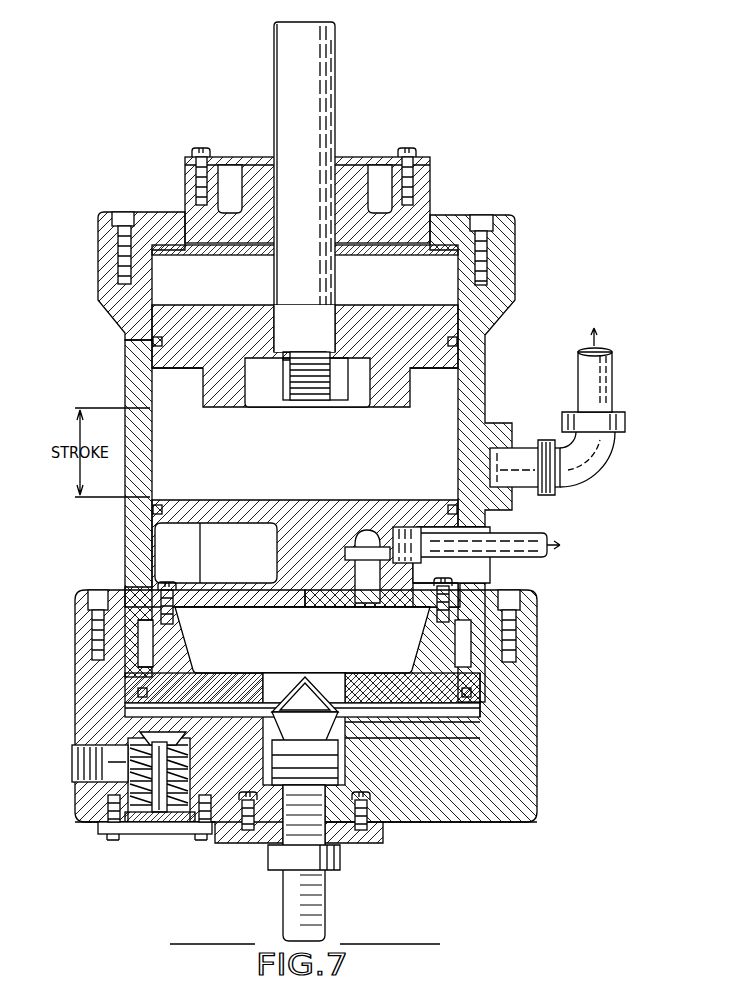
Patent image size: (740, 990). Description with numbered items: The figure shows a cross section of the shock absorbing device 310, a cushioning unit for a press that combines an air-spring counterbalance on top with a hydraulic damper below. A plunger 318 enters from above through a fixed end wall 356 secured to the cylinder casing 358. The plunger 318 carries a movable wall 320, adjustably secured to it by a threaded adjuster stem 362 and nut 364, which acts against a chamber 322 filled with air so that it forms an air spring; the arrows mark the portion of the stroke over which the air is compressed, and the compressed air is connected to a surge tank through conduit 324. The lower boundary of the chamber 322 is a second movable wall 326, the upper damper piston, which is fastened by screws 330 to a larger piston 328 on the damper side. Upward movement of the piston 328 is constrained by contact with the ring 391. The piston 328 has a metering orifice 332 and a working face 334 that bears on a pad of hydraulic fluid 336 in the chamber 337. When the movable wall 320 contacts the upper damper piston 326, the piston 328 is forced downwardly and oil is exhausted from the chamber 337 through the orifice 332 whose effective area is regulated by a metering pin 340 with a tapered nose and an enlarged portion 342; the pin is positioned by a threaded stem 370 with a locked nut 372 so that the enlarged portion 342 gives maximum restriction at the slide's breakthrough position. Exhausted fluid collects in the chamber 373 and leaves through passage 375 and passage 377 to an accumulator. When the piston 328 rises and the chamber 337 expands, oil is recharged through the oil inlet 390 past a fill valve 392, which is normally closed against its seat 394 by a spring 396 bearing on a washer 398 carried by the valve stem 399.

The shock absorbing device 310 is at (117, 334).
The plunger 318 is at (274, 68).
The movable wall 320 is at (376, 305).
The chamber 322 is at (388, 457).
The conduit 324 is at (617, 387).
The second movable wall 326 is at (305, 505).
The piston 328 is at (482, 677).
The screws 330 is at (176, 612).
The metering orifice 332 is at (256, 700).
The working face 334 is at (463, 706).
The hydraulic fluid 336 is at (413, 722).
The chamber 337 is at (430, 708).
The metering pin 340 is at (316, 676).
The enlarged portion 342 is at (345, 685).
The fixed end wall 356 is at (424, 202).
The cylinder casing 358 is at (517, 274).
The threaded adjuster stem 362 is at (284, 318).
The nut 364 is at (276, 400).
The threaded stem 370 is at (283, 893).
The locked nut 372 is at (338, 868).
The chamber 373 is at (284, 648).
The passage 375 is at (360, 602).
The passage 377 is at (524, 540).
The oil inlet 390 is at (72, 776).
The ring 391 is at (520, 639).
The fill valve 392 is at (163, 716).
The seat 394 is at (140, 738).
The spring 396 is at (136, 834).
The washer 398 is at (182, 833).
The valve stem 399 is at (189, 767).